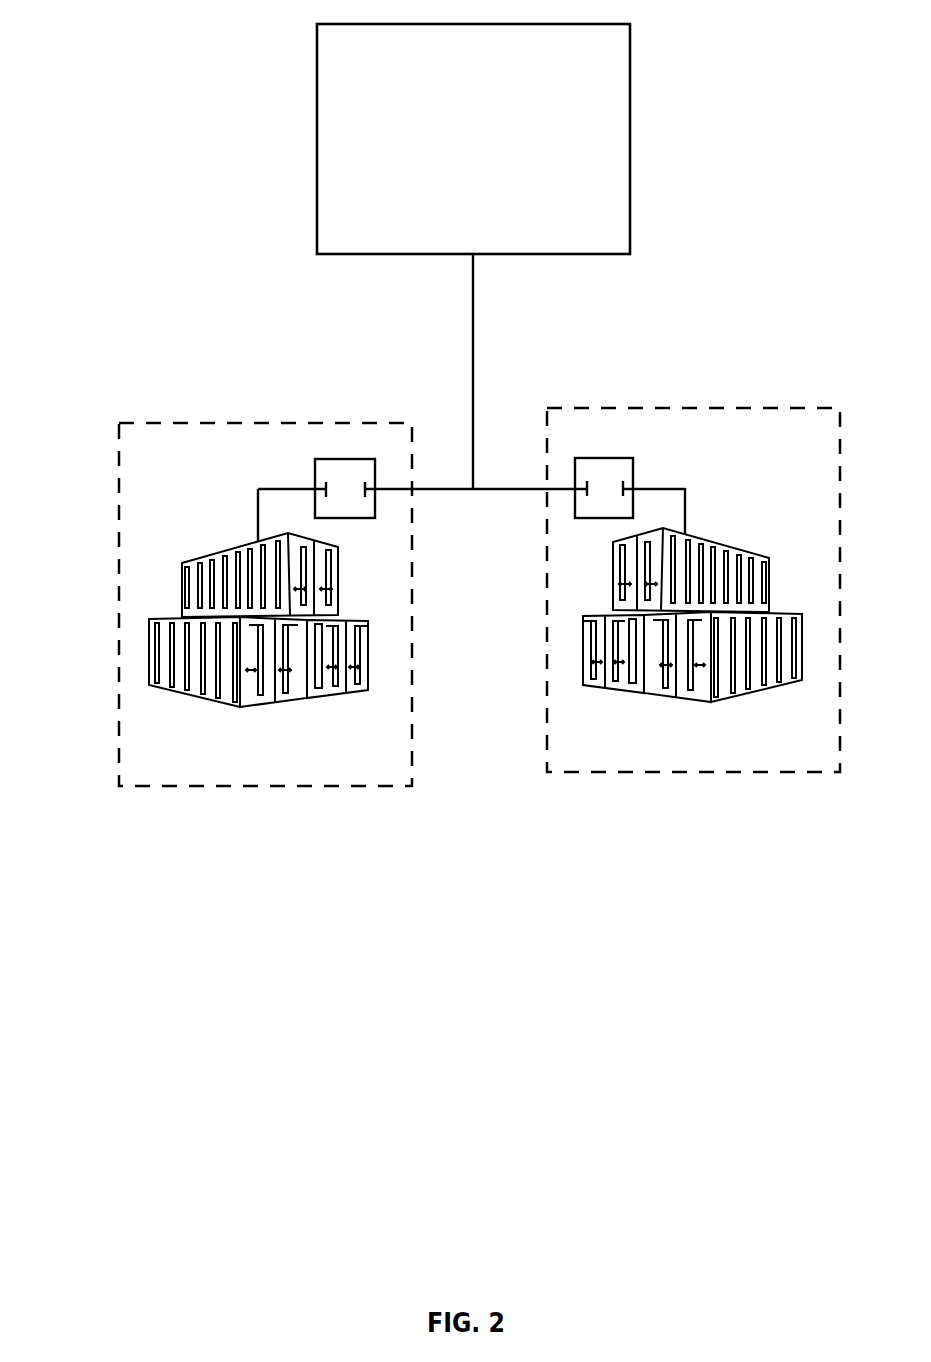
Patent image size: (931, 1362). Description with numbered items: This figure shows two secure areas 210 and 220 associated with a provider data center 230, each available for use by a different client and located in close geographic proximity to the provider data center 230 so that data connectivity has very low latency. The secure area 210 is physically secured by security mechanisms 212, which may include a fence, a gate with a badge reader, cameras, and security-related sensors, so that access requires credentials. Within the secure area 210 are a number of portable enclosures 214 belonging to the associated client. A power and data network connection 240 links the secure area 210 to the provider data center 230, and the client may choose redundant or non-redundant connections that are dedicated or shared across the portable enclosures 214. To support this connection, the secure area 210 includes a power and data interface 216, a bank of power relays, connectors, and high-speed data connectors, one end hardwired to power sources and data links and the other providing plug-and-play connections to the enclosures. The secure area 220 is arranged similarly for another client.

The secure area 210 is at (221, 635).
The security mechanisms 212 is at (412, 792).
The portable enclosures 214 is at (200, 574).
The power and data interface 216 is at (322, 459).
The secure area 220 is at (753, 733).
The provider data center 230 is at (473, 139).
The power and data network connection 240 is at (473, 296).